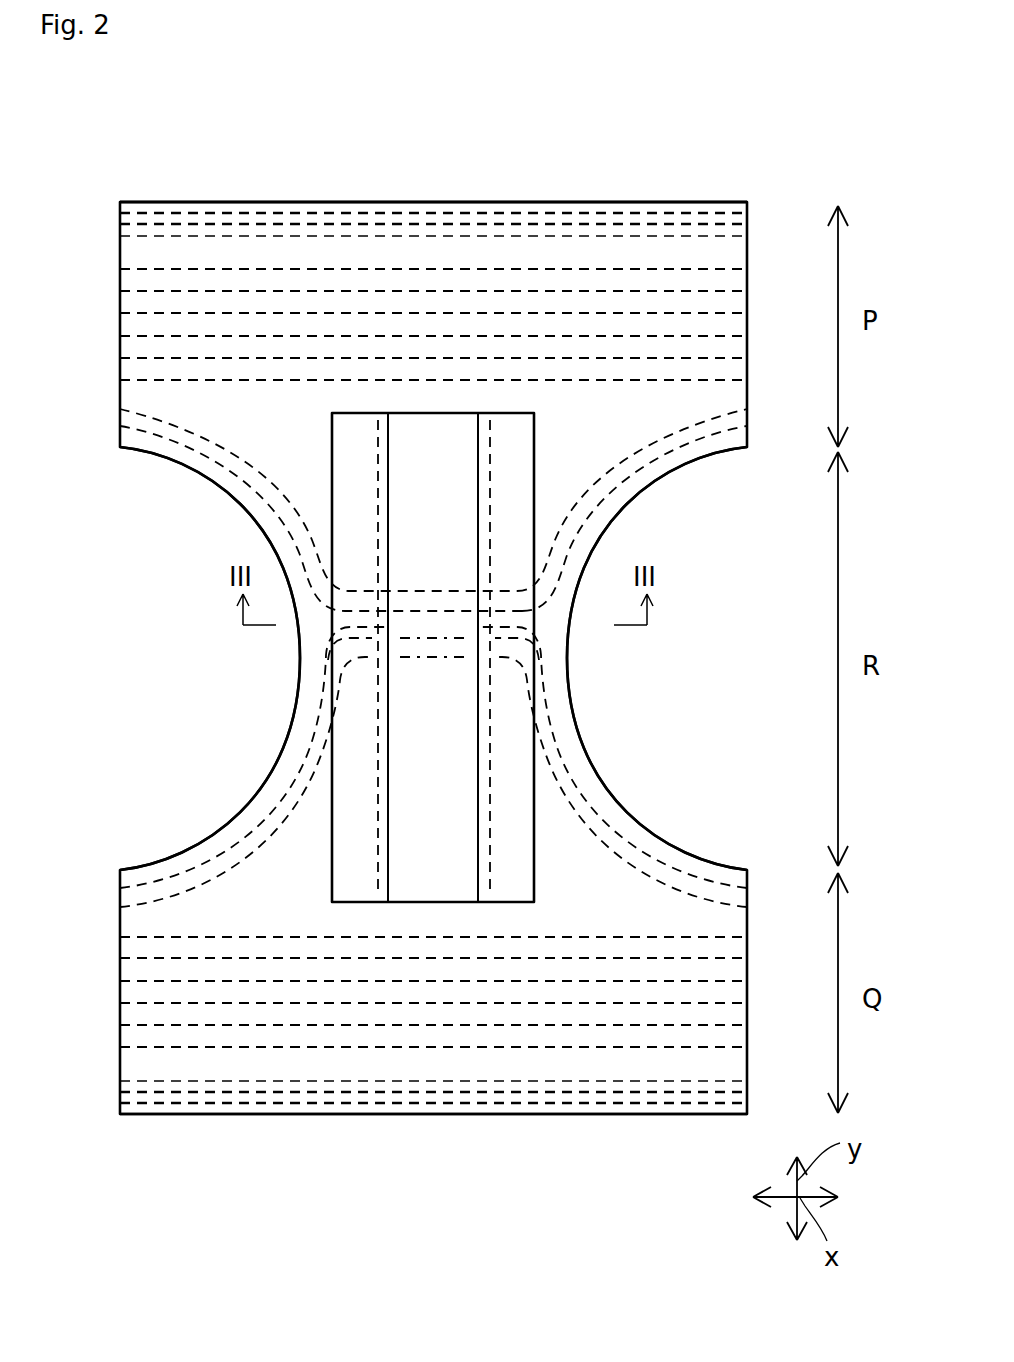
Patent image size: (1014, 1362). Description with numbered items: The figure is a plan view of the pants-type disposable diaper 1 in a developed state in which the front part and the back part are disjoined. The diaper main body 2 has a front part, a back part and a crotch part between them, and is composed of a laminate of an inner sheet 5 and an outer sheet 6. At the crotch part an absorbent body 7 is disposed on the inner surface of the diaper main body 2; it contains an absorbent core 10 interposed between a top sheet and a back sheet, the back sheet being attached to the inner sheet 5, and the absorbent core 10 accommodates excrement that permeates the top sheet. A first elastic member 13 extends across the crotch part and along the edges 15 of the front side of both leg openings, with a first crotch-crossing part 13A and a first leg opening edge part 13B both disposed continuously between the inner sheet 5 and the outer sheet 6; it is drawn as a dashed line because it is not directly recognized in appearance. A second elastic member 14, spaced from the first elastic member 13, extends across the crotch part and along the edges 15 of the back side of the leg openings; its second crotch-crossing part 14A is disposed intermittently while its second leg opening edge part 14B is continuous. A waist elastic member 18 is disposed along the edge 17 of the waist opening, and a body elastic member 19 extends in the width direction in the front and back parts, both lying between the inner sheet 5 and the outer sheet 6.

The pants-type disposable diaper 1 is at (687, 181).
The diaper main body 2 is at (748, 272).
The inner sheet 5 is at (420, 252).
The outer sheet 6 is at (204, 199).
The absorbent body 7 is at (450, 762).
The absorbent core 10 is at (433, 657).
The first elastic member 13 is at (677, 632).
The first crotch-crossing part 13A is at (543, 630).
The first leg opening edge part 13B is at (565, 542).
The second elastic member 14 is at (186, 657).
The second crotch-crossing part 14A is at (323, 633).
The second leg opening edge part 14B is at (314, 714).
The edges of the leg openings 15 is at (657, 475).
The edge of the waist opening 17 is at (334, 201).
The waist elastic member 18 is at (264, 213).
The body elastic member 19 is at (623, 268).